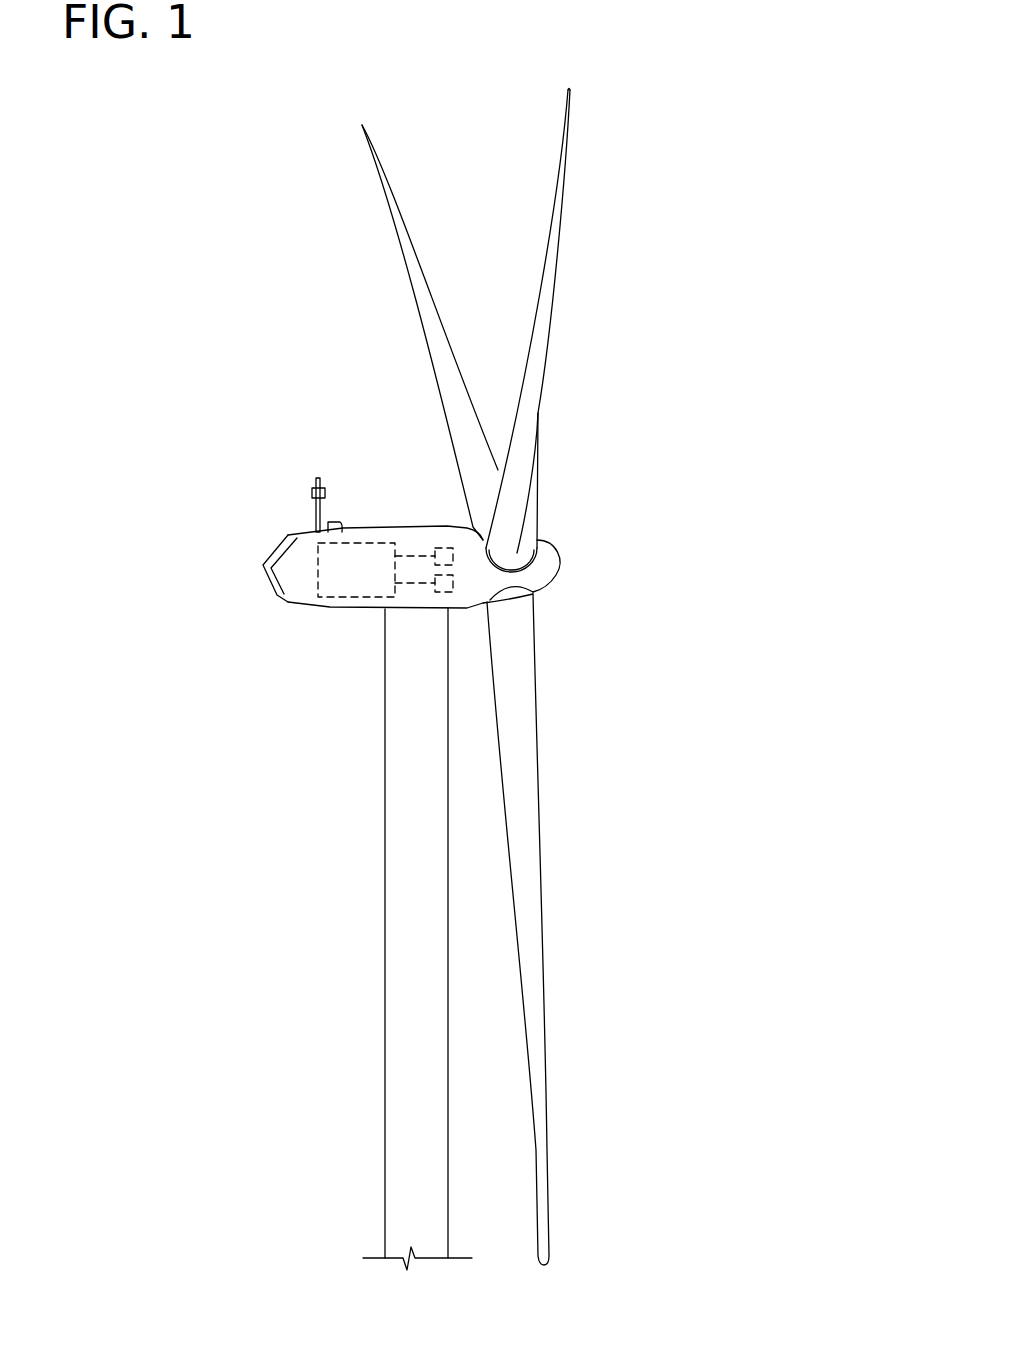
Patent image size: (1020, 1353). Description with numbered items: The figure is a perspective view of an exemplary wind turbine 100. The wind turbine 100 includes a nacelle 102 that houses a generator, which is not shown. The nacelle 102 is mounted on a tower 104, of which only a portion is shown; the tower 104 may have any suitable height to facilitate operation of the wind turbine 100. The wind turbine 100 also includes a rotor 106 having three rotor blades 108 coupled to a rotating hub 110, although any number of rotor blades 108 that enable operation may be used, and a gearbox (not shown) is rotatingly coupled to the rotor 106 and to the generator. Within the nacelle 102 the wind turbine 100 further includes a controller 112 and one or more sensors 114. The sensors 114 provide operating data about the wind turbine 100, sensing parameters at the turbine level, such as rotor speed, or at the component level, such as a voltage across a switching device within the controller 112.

The wind turbine 100 is at (252, 173).
The nacelle 102 is at (313, 608).
The tower 104 is at (385, 885).
The rotor 106 is at (608, 305).
The rotor blades 108 is at (398, 208).
The rotating hub 110 is at (556, 575).
The controller 112 is at (318, 549).
The sensors 114 is at (447, 548).